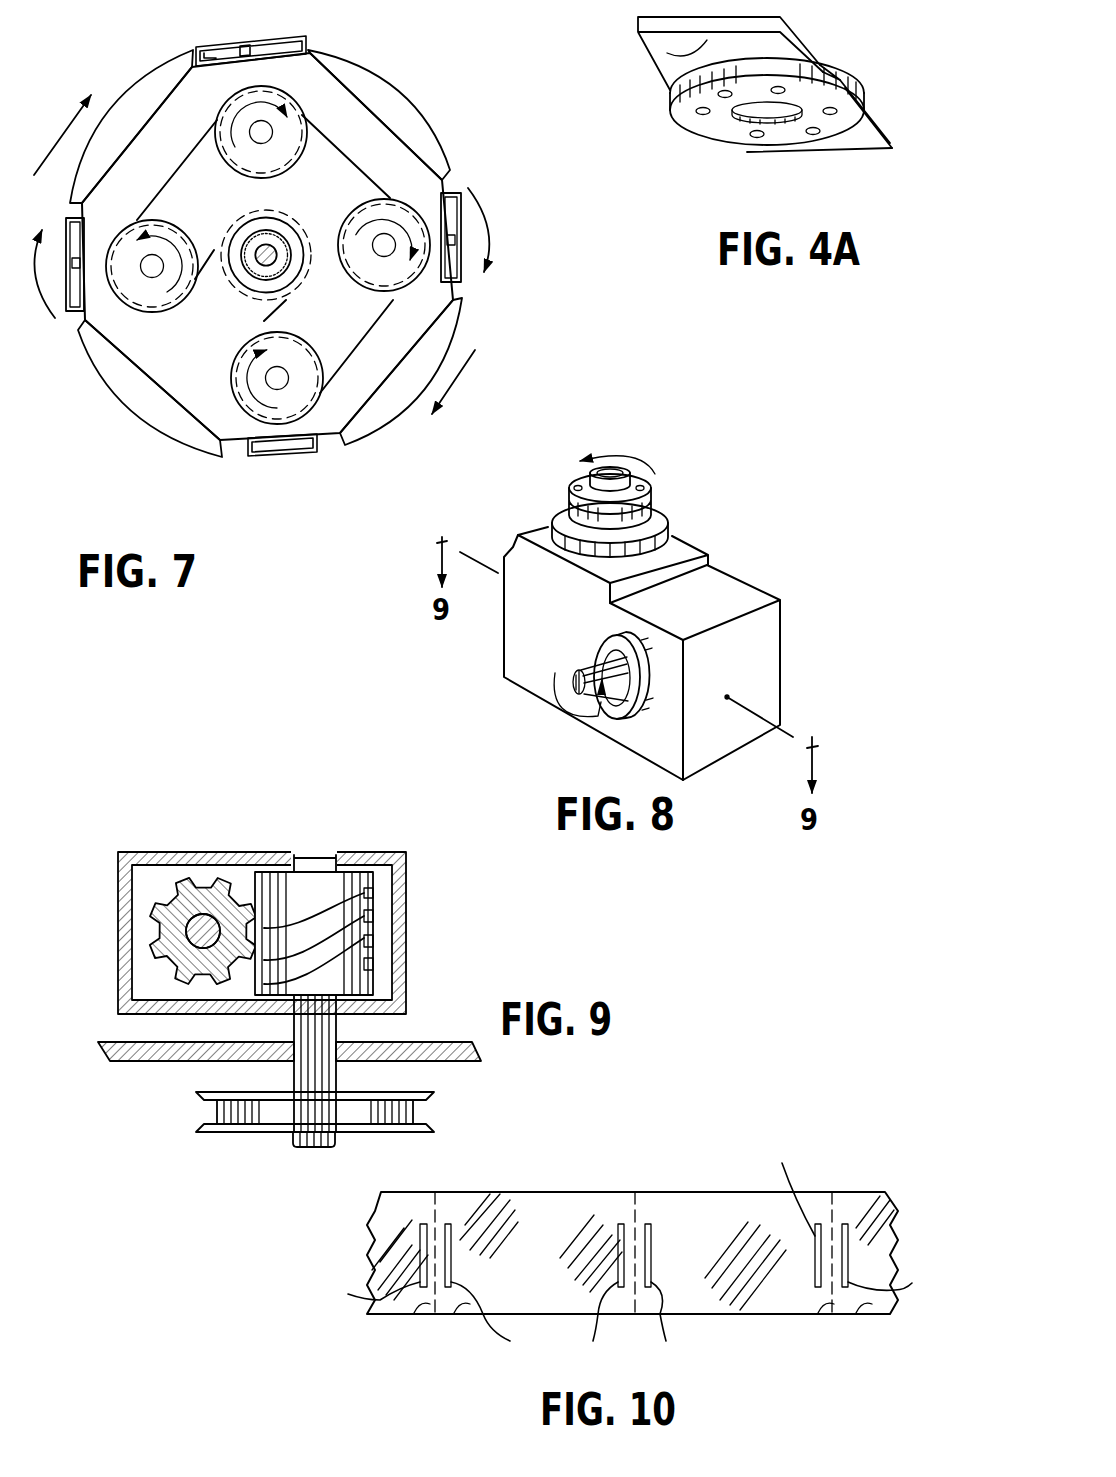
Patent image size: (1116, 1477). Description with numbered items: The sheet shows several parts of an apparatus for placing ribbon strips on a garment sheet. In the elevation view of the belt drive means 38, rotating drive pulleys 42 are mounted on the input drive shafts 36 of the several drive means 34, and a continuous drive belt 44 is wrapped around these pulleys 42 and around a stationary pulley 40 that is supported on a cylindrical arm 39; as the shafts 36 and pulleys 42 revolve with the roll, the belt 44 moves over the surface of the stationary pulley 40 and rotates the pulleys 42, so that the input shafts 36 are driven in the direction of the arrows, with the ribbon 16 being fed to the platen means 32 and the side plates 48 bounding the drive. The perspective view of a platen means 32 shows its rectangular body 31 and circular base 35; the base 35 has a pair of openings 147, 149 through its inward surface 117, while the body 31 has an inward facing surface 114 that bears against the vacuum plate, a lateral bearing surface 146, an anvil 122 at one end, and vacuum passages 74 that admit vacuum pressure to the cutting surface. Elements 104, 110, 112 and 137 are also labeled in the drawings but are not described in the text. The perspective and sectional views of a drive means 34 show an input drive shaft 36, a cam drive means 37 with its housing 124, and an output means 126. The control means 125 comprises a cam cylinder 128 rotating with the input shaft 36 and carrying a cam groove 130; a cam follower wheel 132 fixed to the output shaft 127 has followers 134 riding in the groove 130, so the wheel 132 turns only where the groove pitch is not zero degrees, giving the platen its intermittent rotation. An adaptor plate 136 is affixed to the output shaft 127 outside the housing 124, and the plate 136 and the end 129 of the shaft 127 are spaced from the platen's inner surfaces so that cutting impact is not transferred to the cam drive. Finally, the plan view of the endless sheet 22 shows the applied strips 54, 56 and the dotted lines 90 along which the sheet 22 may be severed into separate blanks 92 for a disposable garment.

In FIG. 7, the ribbon 16 is at (118, 93).
In FIG. 7, the platen means 32 is at (314, 36).
In FIG. 7, the belt drive means 38 is at (352, 154).
In FIG. 7, the continuous drive belt 44 is at (189, 146).
In FIG. 7, the rotating drive pulleys 42 is at (298, 137).
In FIG. 9, the rotating drive pulleys 42 is at (232, 1134).
In FIG. 7, the input drive shaft 36 is at (259, 137).
In FIG. 8, the input drive shaft 36 is at (555, 673).
In FIG. 9, the input drive shaft 36 is at (293, 1140).
In FIG. 7, the stationary pulley 40 is at (238, 263).
In FIG. 7, the cylindrical arm 39 is at (246, 282).
In FIG. 7, the drive shaft 104 is at (266, 262).
In FIG. 7, the side plates 48 is at (400, 168).
In FIG. 9, the side plates 48 is at (171, 1062).
In FIG. 4A, the rectangular body 31 is at (643, 26).
In FIG. 4A, the anvil 122 is at (893, 149).
In FIG. 4A, the lateral bearing surface 146 is at (830, 73).
In FIG. 4A, the inward facing surface 114 is at (667, 53).
In FIG. 4A, the disk 110 is at (850, 100).
In FIG. 4A, the inward surface 117 is at (747, 83).
In FIG. 4A, the flange 112 is at (678, 90).
In FIG. 4A, the circular base 35 is at (780, 144).
In FIG. 4A, the vacuum passages 74 is at (757, 138).
In FIG. 4A, the opening 149 is at (700, 117).
In FIG. 4A, the opening 147 is at (833, 113).
In FIG. 8, the drive means 34 is at (797, 497).
In FIG. 9, the drive means 34 is at (290, 765).
In FIG. 8, the output means 126 is at (673, 462).
In FIG. 8, the cam drive means 37 is at (537, 638).
In FIG. 9, the cam drive means 37 is at (233, 849).
In FIG. 8, the housing 124 is at (770, 647).
In FIG. 9, the housing 124 is at (408, 886).
In FIG. 8, the adaptor plate 136 is at (663, 515).
In FIG. 8, the hub 137 is at (647, 500).
In FIG. 8, the end of the shaft 129 is at (613, 471).
In FIG. 8, the output shaft 127 is at (590, 478).
In FIG. 9, the output shaft 127 is at (190, 938).
In FIG. 9, the cam follower wheel 132 is at (159, 888).
In FIG. 9, the followers 134 is at (203, 875).
In FIG. 9, the control means 125 is at (386, 939).
In FIG. 9, the cam groove 130 is at (366, 921).
In FIG. 9, the cam cylinder 128 is at (374, 966).
In FIG. 10, the endless sheet 22 is at (717, 1161).
In FIG. 10, the dotted lines 90 is at (442, 1206).
In FIG. 10, the strip 54 is at (697, 1315).
In FIG. 10, the strip 56 is at (566, 1252).
In FIG. 10, the blanks 92 is at (460, 1310).